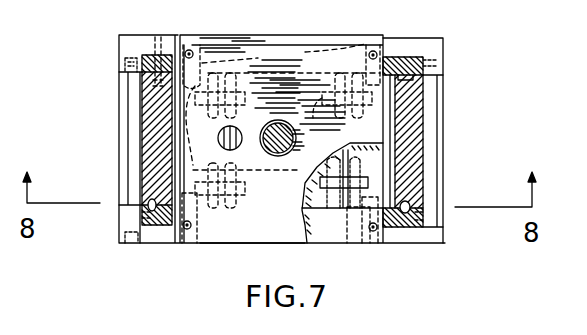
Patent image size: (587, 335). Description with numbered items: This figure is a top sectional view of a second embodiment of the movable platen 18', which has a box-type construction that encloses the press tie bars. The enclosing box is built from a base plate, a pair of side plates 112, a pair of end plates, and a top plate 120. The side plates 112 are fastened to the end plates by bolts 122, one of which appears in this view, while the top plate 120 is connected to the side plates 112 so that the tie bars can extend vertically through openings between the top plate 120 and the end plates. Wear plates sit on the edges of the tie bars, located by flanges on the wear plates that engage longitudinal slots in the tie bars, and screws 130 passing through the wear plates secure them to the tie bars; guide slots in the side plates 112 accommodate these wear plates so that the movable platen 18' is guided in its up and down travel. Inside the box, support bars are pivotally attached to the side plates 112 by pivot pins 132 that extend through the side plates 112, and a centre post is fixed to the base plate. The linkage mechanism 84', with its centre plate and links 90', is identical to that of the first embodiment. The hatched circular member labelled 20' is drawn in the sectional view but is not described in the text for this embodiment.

The side plates 112 is at (430, 38).
The top plate 120 is at (305, 212).
The bolts 122 is at (125, 240).
The screws 130 is at (158, 36).
The pivot pins 132 is at (392, 258).
The movable platen 18' is at (252, 260).
The shaft 20' is at (279, 154).
The linkage mechanism 84' is at (248, 204).
The links 90' is at (278, 140).